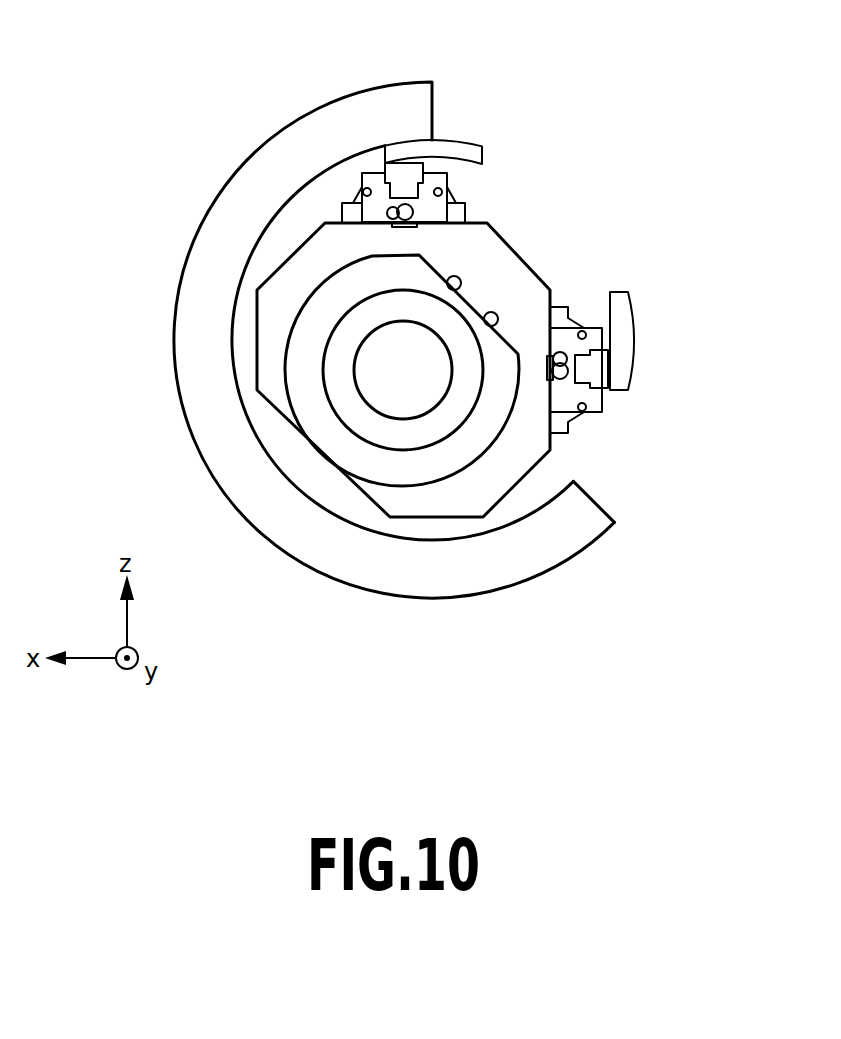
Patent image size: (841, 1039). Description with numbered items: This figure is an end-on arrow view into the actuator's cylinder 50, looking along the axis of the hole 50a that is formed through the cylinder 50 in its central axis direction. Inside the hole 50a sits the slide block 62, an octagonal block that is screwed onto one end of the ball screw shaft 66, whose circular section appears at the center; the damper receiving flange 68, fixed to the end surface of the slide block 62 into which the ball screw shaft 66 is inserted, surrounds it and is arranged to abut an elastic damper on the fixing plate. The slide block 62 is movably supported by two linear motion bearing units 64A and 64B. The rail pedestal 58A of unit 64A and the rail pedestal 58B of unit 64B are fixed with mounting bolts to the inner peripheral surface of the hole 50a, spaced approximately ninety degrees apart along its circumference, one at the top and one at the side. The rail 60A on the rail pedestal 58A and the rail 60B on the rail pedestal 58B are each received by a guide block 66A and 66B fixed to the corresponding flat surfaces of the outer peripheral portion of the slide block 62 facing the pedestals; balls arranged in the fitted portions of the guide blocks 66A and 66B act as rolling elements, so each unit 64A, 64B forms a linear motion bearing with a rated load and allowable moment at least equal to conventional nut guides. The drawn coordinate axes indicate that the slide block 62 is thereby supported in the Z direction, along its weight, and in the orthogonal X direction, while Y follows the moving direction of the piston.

The cylinder 50 is at (275, 155).
The hole 50a is at (563, 492).
The slide block 62 is at (503, 267).
The ball screw shaft 66 is at (375, 375).
The damper receiving flange 68 is at (380, 430).
The rail pedestal 58A is at (465, 152).
The rail 60A is at (400, 173).
The linear motion bearing unit 64A is at (430, 215).
The guide block 66A is at (370, 177).
The rail pedestal 58B is at (625, 338).
The rail 60B is at (602, 373).
The linear motion bearing unit 64B is at (562, 335).
The guide block 66B is at (592, 397).